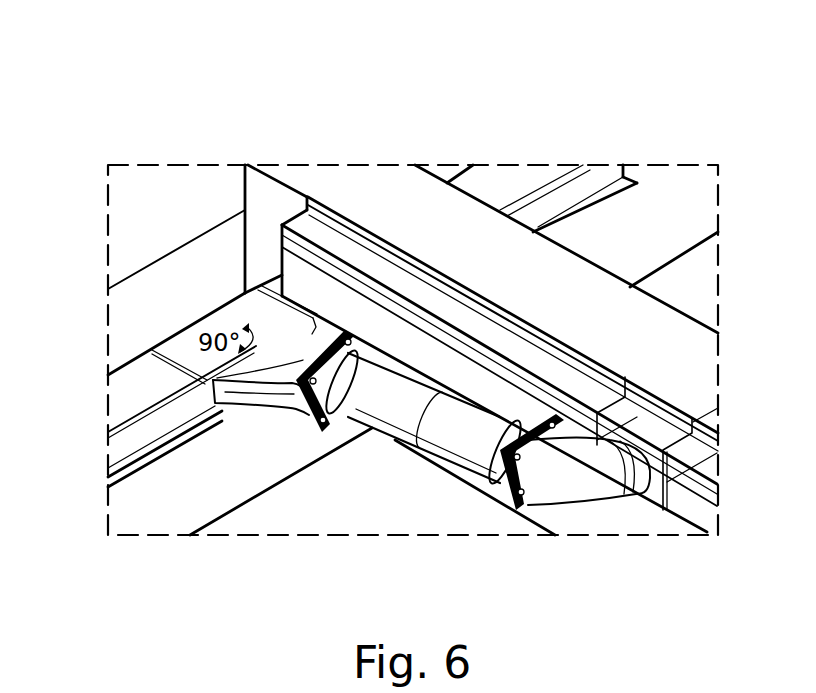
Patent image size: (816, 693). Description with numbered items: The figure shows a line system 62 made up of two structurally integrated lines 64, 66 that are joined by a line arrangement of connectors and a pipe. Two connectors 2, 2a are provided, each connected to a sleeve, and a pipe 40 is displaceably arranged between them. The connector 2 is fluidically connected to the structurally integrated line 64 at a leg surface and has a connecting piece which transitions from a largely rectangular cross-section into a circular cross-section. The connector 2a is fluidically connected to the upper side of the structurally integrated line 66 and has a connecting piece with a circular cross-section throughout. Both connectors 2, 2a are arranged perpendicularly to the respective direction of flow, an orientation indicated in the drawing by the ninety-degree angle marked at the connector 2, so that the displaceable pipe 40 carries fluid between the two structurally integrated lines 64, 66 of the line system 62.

The connector 2 is at (279, 314).
The connector 2a is at (650, 420).
The pipe 40 is at (447, 437).
The line system 62 is at (270, 116).
The structurally integrated line 64 is at (127, 402).
The structurally integrated line 66 is at (548, 367).